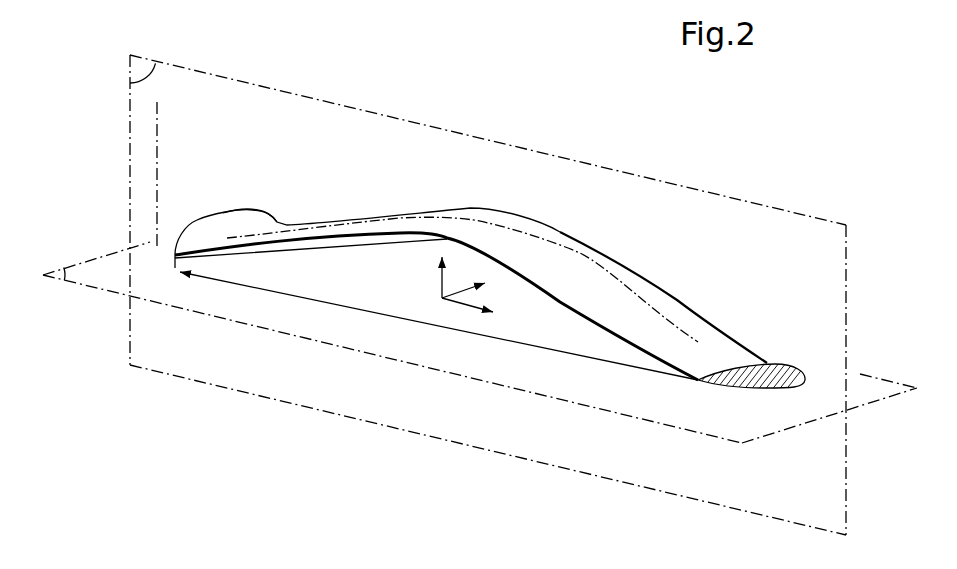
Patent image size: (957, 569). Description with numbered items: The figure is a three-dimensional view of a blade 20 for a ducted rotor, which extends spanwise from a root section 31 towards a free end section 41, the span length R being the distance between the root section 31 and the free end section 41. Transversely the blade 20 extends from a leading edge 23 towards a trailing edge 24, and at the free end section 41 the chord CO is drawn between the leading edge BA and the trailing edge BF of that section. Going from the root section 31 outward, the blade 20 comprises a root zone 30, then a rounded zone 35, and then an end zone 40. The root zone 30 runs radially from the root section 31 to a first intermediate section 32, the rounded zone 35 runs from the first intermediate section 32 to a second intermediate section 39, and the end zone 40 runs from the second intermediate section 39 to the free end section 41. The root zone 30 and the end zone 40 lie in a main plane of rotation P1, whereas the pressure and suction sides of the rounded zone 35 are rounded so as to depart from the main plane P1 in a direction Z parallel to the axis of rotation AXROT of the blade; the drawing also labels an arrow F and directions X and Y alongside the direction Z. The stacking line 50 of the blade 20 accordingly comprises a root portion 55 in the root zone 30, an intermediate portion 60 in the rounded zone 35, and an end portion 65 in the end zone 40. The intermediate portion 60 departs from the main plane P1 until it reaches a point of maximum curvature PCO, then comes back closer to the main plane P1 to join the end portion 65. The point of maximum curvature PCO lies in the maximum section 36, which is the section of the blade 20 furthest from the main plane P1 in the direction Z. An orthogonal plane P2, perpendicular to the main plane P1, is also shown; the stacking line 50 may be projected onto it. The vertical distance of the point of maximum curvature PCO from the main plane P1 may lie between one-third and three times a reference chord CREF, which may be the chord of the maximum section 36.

The blade 20 is at (730, 245).
The leading edge 23 is at (812, 372).
The trailing edge 24 is at (693, 387).
The root zone 30 is at (185, 283).
The root section 31 is at (167, 268).
The first intermediate section 32 is at (173, 282).
The rounded zone 35 is at (413, 340).
The maximum section 36 is at (408, 246).
The second intermediate section 39 is at (777, 354).
The end zone 40 is at (662, 383).
The free end section 41 is at (795, 386).
The stacking line 50 is at (648, 283).
The root portion 55 is at (325, 215).
The intermediate portion 60 is at (523, 237).
The end portion 65 is at (698, 342).
The main plane of rotation P1 is at (478, 341).
The orthogonal plane P2 is at (469, 295).
The axis of rotation AXROT is at (158, 134).
The force direction F is at (510, 65).
The point of maximum curvature PCO is at (488, 223).
The reference chord CREF is at (497, 222).
The span length R is at (439, 326).
The X axis X is at (479, 313).
The Y axis Y is at (474, 283).
The direction parallel to the axis of rotation Z is at (430, 274).
The trailing edge of the free end section BF is at (698, 386).
The leading edge of the free end section BA is at (808, 383).
The chord of the free end section CO is at (719, 386).